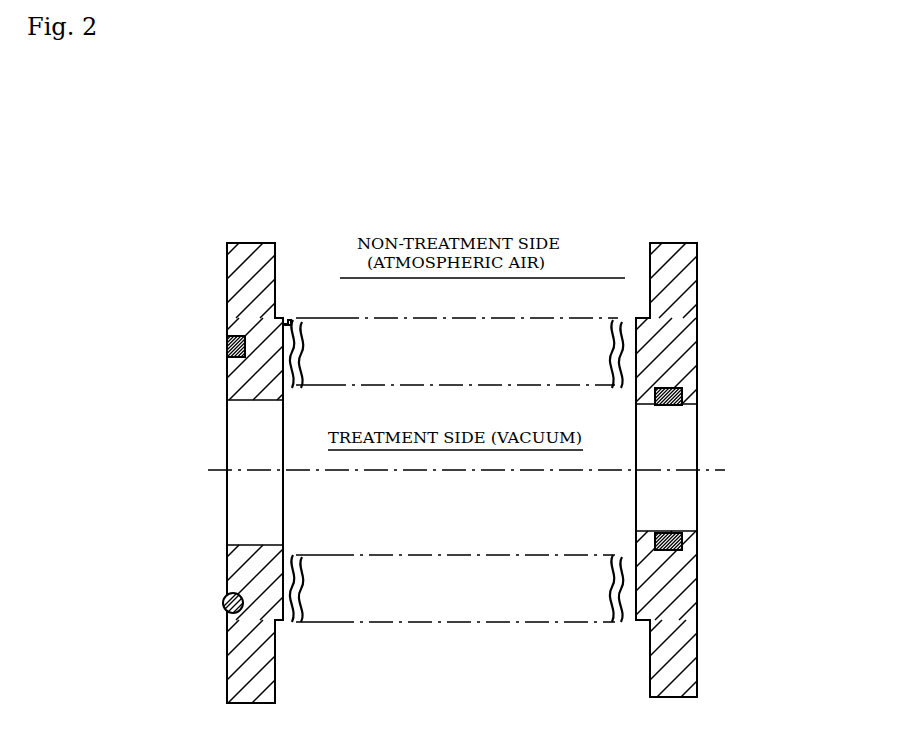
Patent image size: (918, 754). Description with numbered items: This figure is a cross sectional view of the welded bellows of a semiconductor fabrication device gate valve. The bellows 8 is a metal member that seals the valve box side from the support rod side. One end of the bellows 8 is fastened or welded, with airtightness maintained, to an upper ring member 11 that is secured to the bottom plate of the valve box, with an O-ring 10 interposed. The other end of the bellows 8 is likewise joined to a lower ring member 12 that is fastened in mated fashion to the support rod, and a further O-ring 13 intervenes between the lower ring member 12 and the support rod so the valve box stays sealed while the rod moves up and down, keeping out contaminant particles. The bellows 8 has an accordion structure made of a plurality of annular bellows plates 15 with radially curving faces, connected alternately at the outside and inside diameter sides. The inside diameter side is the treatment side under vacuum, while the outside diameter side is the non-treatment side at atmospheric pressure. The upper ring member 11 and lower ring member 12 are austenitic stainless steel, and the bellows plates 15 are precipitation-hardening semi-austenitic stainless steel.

The bellows 8 is at (346, 318).
The O-ring 10 is at (236, 348).
The upper ring member 11 is at (230, 262).
The lower ring member 12 is at (695, 282).
The O-ring 13 is at (668, 408).
The bellows plates 15 is at (308, 358).